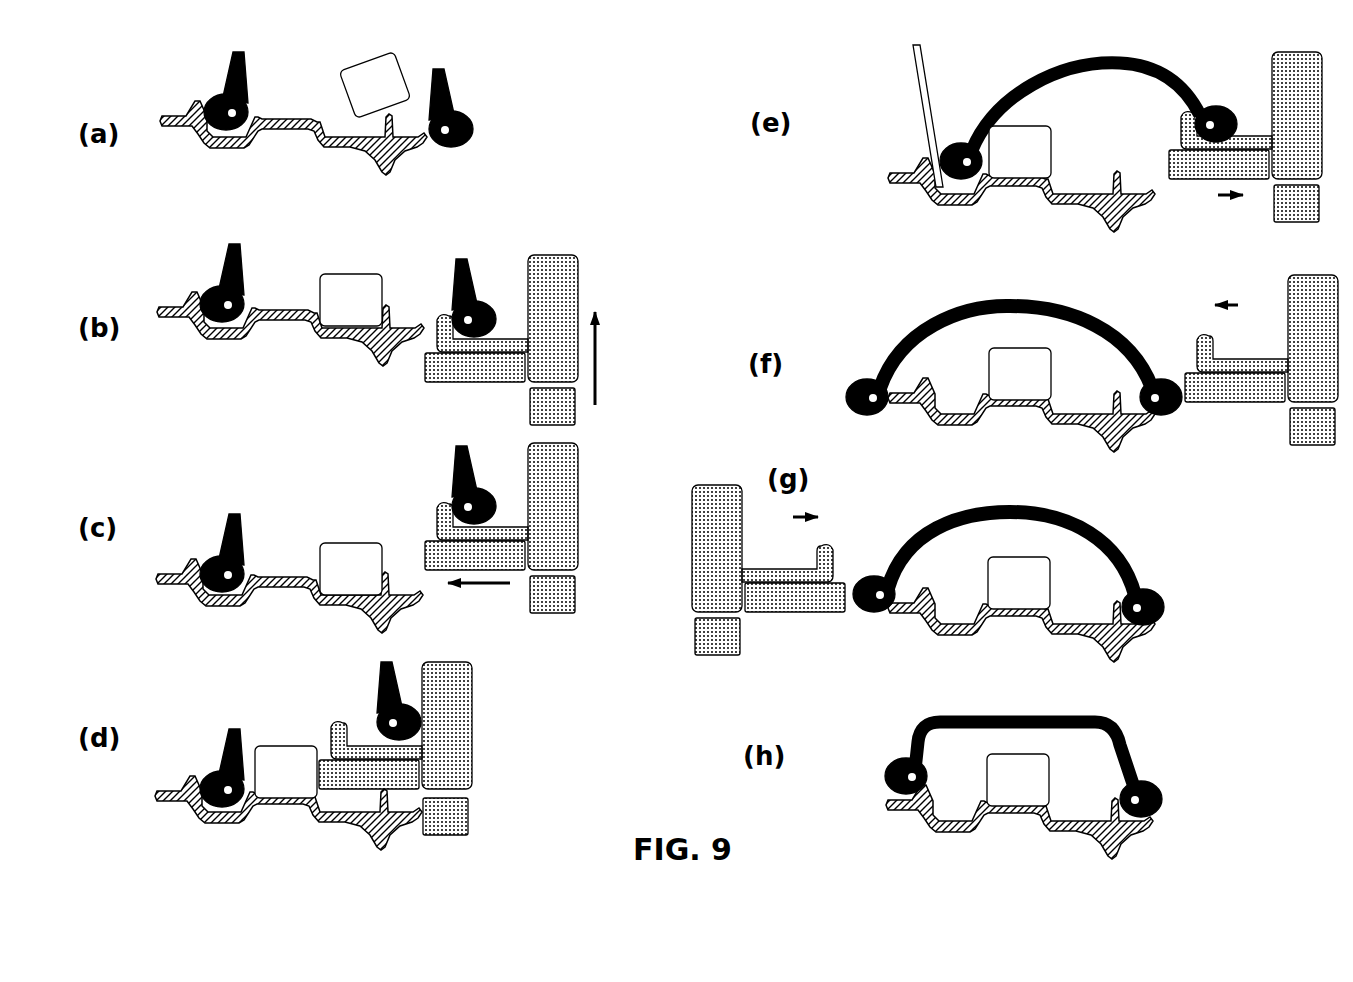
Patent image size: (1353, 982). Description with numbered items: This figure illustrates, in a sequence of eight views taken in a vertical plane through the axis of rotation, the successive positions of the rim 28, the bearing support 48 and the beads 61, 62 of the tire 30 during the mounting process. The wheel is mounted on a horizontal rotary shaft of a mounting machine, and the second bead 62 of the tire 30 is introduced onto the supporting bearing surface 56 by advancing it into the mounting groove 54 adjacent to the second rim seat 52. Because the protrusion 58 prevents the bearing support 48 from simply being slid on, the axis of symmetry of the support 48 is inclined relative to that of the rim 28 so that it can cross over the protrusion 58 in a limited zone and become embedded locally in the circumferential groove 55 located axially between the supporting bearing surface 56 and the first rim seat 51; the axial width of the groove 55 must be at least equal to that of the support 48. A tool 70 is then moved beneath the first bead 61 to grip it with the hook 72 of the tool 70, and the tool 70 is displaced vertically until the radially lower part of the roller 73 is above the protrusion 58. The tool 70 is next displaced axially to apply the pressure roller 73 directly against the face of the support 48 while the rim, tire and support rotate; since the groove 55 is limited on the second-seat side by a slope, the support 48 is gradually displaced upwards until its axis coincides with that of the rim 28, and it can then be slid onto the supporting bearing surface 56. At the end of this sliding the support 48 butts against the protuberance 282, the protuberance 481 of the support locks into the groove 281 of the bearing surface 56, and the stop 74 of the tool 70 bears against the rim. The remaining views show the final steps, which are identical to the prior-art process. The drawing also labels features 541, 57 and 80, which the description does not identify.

The rim 28 is at (300, 130).
The tire 30 is at (453, 77).
The bearing support 48 is at (653, 429).
The first rim seat 51 is at (415, 115).
The second rim seat 52 is at (172, 96).
The mounting groove 54 is at (200, 143).
The groove bottom 541 is at (941, 201).
The circumferential groove 55 is at (348, 124).
The supporting bearing surface 56 is at (290, 118).
The wall 57 is at (925, 160).
The protrusion 58 is at (383, 163).
The first bead 61 is at (476, 127).
The second bead 62 is at (216, 96).
The tool 70 is at (496, 399).
The hook 72 is at (440, 316).
The pressure roller 73 is at (802, 469).
The stop 74 is at (445, 816).
The pusher rod 80 is at (915, 70).
The groove 281 is at (310, 815).
The protuberance 282 is at (257, 812).
The protuberance 481 is at (308, 790).